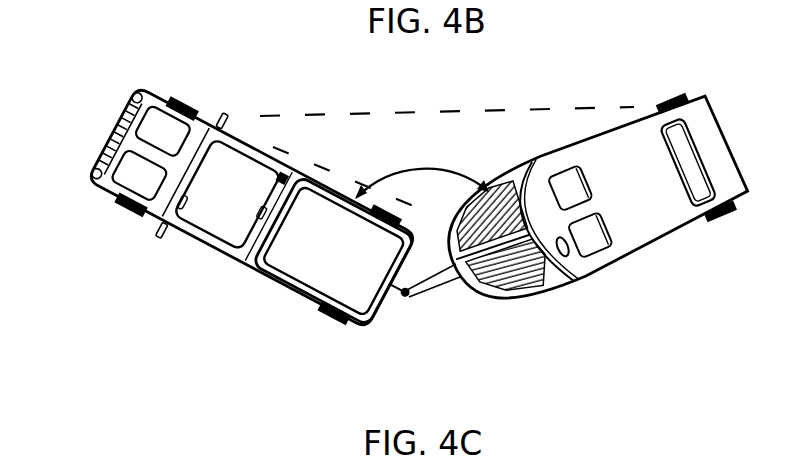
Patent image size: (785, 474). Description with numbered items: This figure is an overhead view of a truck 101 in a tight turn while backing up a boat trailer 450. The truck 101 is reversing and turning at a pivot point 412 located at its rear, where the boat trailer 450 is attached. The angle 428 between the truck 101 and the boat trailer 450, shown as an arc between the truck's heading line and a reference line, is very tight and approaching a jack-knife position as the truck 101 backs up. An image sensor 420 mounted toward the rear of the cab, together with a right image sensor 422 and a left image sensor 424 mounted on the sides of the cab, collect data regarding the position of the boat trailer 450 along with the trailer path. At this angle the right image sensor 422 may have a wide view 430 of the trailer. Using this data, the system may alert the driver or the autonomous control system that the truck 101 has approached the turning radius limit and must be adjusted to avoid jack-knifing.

The truck 101 is at (213, 259).
The pivot point 412 is at (411, 296).
The image sensor 420 is at (289, 176).
The right image sensor 422 is at (222, 114).
The left image sensor 424 is at (152, 240).
The angle 428 is at (464, 178).
The wide view 430 is at (395, 149).
The boat trailer 450 is at (620, 152).